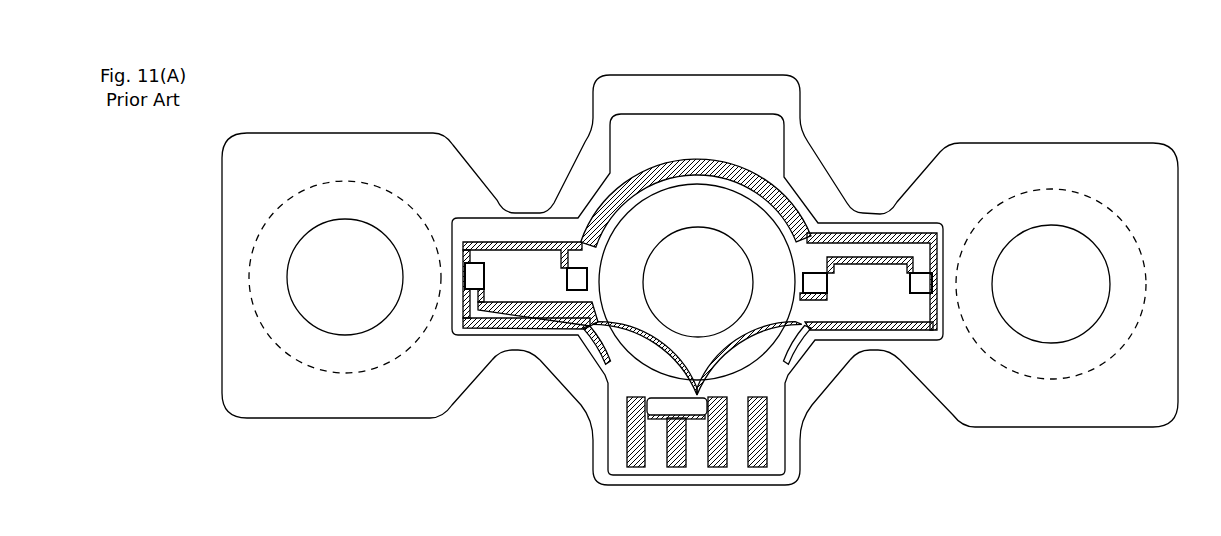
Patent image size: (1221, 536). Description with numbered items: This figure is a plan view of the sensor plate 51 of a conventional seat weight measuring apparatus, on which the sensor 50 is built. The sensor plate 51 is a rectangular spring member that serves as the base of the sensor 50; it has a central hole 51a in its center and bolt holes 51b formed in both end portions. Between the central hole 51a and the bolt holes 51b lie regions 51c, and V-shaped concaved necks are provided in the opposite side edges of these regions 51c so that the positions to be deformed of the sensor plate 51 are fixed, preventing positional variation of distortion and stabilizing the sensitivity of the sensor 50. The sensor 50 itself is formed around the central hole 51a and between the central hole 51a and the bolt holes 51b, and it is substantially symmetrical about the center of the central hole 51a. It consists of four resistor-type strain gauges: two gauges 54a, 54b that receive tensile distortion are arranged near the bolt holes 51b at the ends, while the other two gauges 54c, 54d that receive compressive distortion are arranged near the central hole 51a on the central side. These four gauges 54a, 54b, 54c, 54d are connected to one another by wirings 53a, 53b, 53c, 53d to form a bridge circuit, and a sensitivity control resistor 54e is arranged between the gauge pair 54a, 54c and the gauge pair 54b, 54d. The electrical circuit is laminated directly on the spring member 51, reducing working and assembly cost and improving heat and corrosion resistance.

The sensor 50 is at (644, 134).
The sensor plate 51 is at (558, 128).
The central hole 51a is at (686, 232).
The bolt holes 51b is at (345, 232).
The regions between central hole and bolt holes 51c is at (510, 349).
The wiring 53a is at (603, 362).
The wiring 53b is at (613, 378).
The wiring 53c is at (790, 372).
The wiring 53d is at (805, 360).
The resistor-type strain gauge 54a is at (476, 268).
The resistor-type strain gauge 54b is at (922, 278).
The resistor-type strain gauge 54c is at (574, 270).
The resistor-type strain gauge 54d is at (814, 278).
The sensitivity control resistor 54e is at (655, 414).